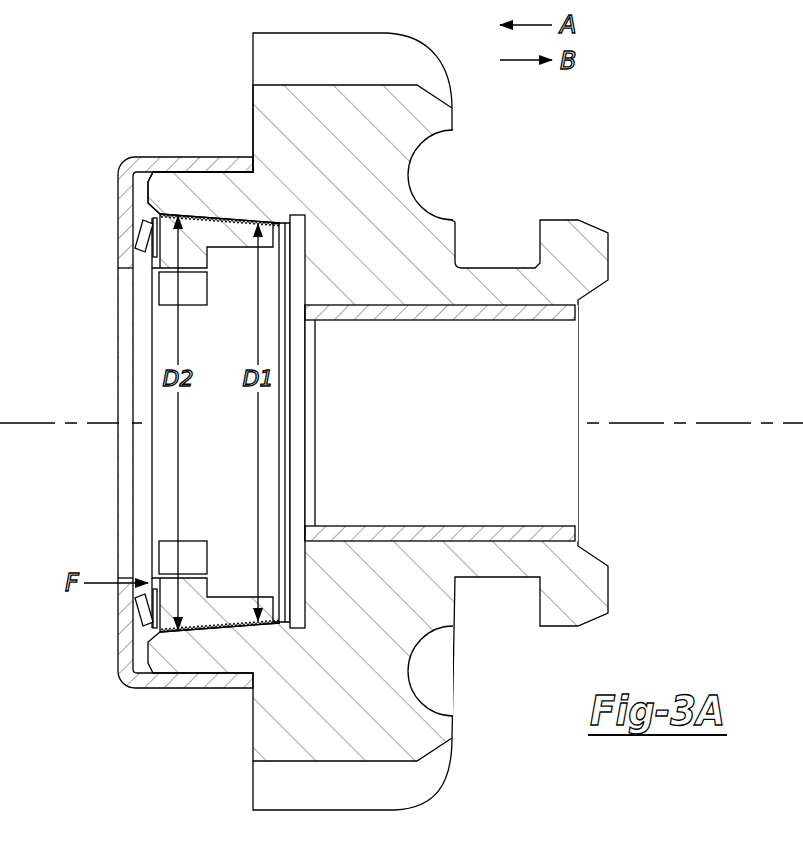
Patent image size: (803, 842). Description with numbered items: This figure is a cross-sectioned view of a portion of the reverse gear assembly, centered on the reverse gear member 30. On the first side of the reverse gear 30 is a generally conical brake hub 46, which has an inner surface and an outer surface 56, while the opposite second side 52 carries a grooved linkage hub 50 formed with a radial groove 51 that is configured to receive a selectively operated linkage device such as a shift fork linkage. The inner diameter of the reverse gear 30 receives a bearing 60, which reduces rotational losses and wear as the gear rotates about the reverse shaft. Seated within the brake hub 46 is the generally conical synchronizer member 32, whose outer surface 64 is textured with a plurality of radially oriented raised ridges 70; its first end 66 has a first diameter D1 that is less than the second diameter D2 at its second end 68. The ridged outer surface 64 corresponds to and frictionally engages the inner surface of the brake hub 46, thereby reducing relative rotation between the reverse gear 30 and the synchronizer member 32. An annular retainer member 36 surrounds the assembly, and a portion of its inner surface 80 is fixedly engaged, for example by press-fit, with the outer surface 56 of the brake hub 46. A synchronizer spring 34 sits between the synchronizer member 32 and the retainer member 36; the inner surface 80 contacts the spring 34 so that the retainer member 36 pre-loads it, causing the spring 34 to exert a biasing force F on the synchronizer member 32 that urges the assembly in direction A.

The reverse gear member 30 is at (446, 117).
The synchronizer member 32 is at (191, 260).
The synchronizer spring 34 is at (140, 240).
The retainer member 36 is at (136, 158).
The brake hub 46 is at (246, 160).
The grooved linkage hub 50 is at (510, 180).
The radial groove 51 is at (495, 580).
The second side 52 is at (605, 193).
The outer surface of the brake hub 56 is at (166, 172).
The bearing 60 is at (452, 320).
The outer surface of the synchronizer member 64 is at (229, 213).
The first end of the synchronizer member 66 is at (194, 578).
The second end of the synchronizer member 68 is at (238, 635).
The raised ridges 70 is at (255, 219).
The inner surface of the retaining member 80 is at (135, 212).